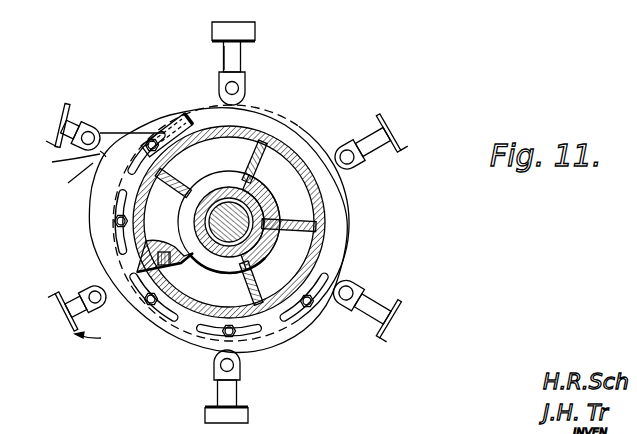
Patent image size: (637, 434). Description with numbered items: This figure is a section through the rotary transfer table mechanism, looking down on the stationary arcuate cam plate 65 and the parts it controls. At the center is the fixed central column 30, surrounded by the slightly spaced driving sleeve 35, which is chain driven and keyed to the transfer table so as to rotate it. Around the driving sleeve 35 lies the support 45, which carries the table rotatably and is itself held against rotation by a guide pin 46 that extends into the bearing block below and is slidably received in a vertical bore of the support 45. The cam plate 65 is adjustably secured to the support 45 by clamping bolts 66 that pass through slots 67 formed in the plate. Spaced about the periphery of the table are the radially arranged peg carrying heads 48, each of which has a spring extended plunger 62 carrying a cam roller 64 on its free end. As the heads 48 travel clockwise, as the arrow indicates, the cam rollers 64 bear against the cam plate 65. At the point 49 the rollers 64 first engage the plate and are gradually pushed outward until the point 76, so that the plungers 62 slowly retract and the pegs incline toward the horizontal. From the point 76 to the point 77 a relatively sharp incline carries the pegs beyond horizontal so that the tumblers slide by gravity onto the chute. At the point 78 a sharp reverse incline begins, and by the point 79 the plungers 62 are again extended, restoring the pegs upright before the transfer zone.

The central column 30 is at (243, 217).
The driving sleeve 35 is at (218, 195).
The support 45 is at (250, 192).
The guide pin 46 is at (190, 262).
The peg carrying head 48 is at (99, 337).
The point on the cam plate 49 is at (322, 297).
The plunger 62 is at (233, 57).
The cam roller 64 is at (246, 91).
The cam plate 65 is at (167, 327).
The clamping bolt 66 is at (160, 130).
The slot 67 is at (184, 112).
The point on the cam plate 76 is at (69, 180).
The point on the cam plate 77 is at (65, 164).
The point on the cam plate 78 is at (112, 132).
The point on the cam plate 79 is at (152, 138).